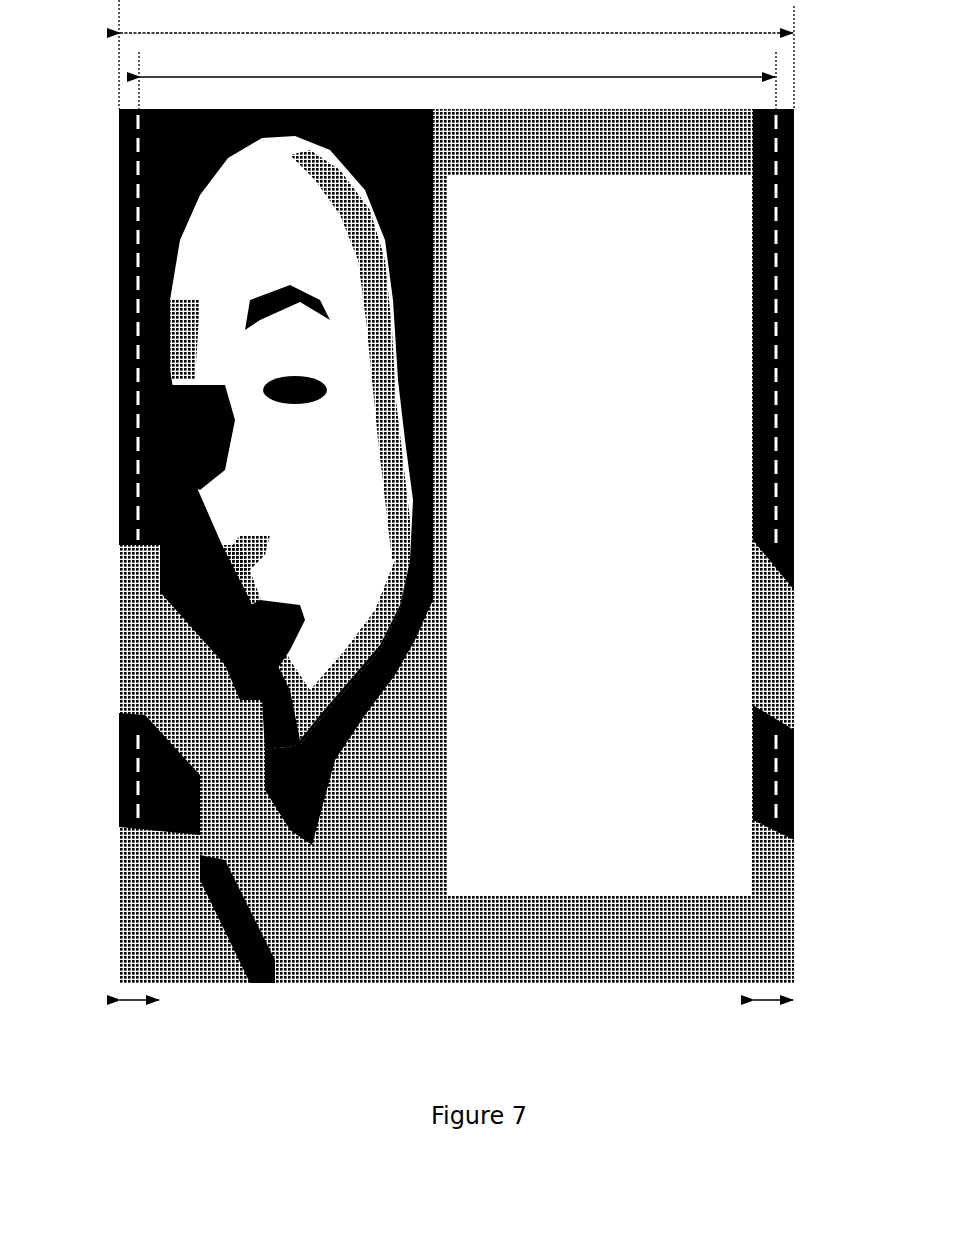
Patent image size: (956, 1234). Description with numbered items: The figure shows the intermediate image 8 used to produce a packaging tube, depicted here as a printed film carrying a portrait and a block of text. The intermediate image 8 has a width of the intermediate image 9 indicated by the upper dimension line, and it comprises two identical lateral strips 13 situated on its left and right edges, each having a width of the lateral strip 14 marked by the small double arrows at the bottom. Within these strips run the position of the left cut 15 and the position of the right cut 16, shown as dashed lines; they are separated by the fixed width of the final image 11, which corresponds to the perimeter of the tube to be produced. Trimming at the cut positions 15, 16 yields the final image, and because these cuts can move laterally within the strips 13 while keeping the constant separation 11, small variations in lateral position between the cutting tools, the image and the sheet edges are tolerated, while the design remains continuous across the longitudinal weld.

The intermediate image 8 is at (92, 142).
The width of the intermediate image 9 is at (456, 54).
The width of the final image 11 is at (457, 78).
The lateral strip 13 is at (160, 667).
The width of the lateral strip 14 is at (456, 1023).
The position of the left cut 15 is at (139, 386).
The position of the right cut 16 is at (776, 272).